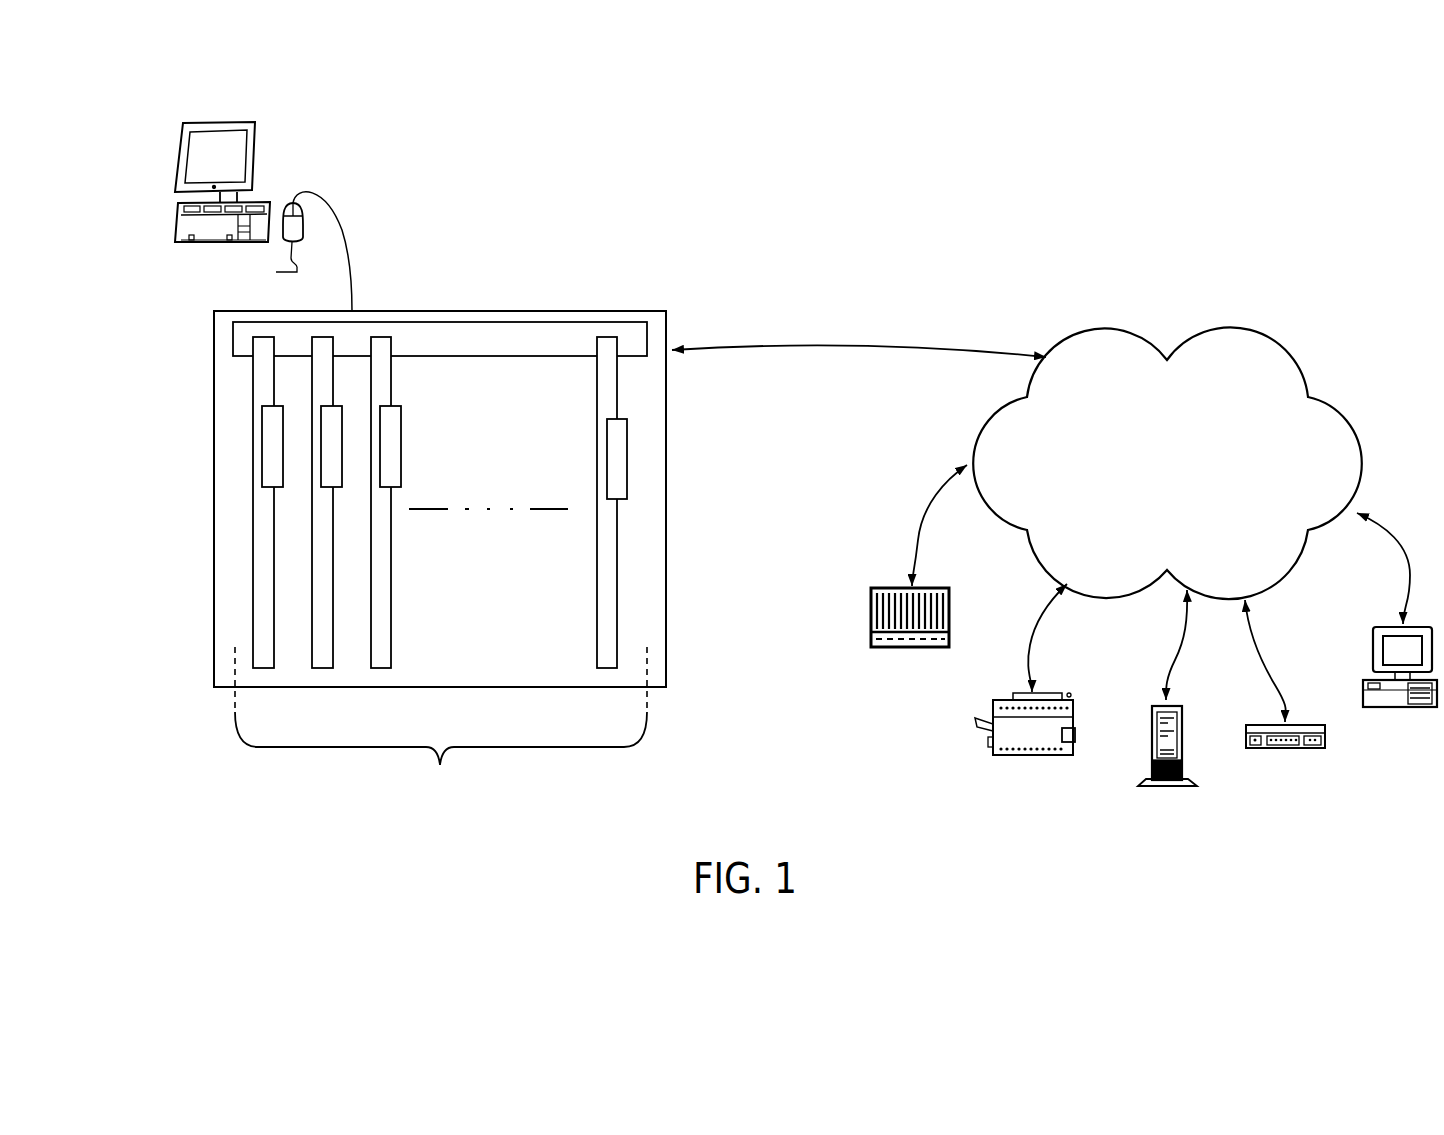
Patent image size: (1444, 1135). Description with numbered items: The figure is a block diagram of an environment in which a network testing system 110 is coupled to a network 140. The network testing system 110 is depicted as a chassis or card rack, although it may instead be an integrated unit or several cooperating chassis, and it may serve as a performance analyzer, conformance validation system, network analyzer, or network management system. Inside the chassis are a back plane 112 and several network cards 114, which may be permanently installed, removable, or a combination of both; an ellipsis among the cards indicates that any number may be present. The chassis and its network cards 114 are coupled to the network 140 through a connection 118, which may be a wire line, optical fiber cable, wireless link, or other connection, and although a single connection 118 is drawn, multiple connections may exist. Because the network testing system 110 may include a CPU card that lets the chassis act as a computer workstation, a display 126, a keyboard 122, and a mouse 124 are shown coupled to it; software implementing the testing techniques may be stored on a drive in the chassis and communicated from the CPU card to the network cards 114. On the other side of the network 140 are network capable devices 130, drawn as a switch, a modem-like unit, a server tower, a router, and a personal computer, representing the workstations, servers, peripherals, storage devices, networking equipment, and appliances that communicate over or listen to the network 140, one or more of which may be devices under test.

The network testing system 110 is at (389, 311).
The back plane 112 is at (440, 338).
The network cards 114 is at (441, 586).
The connections 118 is at (860, 346).
The keyboard 122 is at (178, 223).
The mouse 124 is at (294, 251).
The display 126 is at (184, 162).
The network capable devices 130 is at (1156, 657).
The network 140 is at (1167, 463).